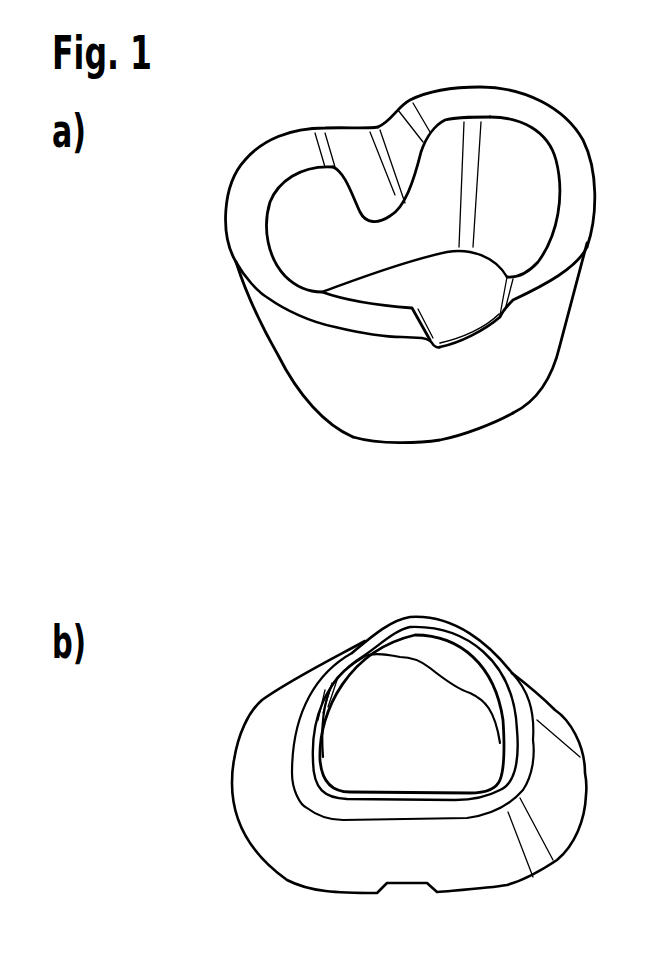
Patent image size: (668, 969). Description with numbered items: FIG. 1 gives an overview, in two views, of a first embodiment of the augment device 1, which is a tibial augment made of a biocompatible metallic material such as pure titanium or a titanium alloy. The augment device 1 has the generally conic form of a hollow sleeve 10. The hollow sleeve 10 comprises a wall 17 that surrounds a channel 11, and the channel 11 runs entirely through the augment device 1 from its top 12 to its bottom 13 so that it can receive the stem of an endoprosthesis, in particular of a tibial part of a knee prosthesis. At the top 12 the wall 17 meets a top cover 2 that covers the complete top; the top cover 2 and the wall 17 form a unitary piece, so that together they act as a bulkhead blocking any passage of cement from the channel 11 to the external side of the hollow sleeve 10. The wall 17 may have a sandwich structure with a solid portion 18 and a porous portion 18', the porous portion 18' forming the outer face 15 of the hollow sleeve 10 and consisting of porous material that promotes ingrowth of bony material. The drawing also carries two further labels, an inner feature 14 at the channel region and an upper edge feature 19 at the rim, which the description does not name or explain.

The augment device 1 is at (300, 116).
The top cover 2 is at (578, 197).
The hollow sleeve 10 is at (545, 320).
The channel 11 is at (365, 256).
The top 12 is at (250, 205).
The bottom 13 is at (498, 423).
The inner wall surface 14 is at (448, 153).
The outer face 15 is at (320, 358).
The wall 17 is at (362, 648).
The solid portion 18 is at (429, 683).
The porous portion 18' is at (411, 751).
The upper rim edge 19 is at (581, 133).